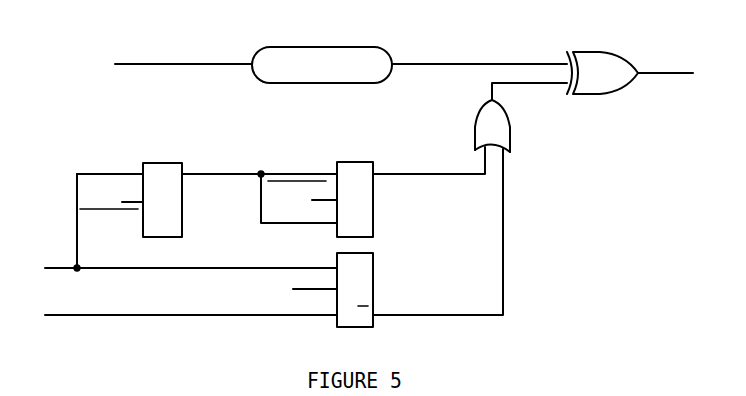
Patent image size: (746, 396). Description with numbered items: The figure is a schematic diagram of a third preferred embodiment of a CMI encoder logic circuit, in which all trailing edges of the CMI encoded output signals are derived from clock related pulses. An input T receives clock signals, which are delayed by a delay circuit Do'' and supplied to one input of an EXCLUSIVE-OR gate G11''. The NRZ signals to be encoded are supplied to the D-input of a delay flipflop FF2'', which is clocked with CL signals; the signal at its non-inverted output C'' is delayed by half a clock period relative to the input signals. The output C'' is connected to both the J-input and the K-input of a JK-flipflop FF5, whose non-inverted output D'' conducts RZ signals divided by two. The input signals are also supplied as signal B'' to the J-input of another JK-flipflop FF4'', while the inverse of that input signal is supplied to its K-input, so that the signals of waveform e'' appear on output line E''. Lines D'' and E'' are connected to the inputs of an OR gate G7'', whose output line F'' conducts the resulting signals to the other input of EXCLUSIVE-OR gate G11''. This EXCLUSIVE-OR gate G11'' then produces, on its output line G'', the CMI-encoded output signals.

The input T is at (135, 64).
The delay circuit Do'' is at (409, 56).
The output line F'' is at (529, 93).
The EXCLUSIVE-OR gate G11'' is at (602, 61).
The output line G'' is at (665, 62).
The OR gate G7'' is at (518, 126).
The non-inverted output D'' is at (429, 160).
The output line E'' is at (438, 232).
The non-inverted output C'' is at (259, 166).
The delay flipflop FF2'' is at (156, 215).
The JK-flipflop FF5 is at (373, 220).
The input signal B'' is at (178, 269).
The JK-flipflop FF4'' is at (324, 305).